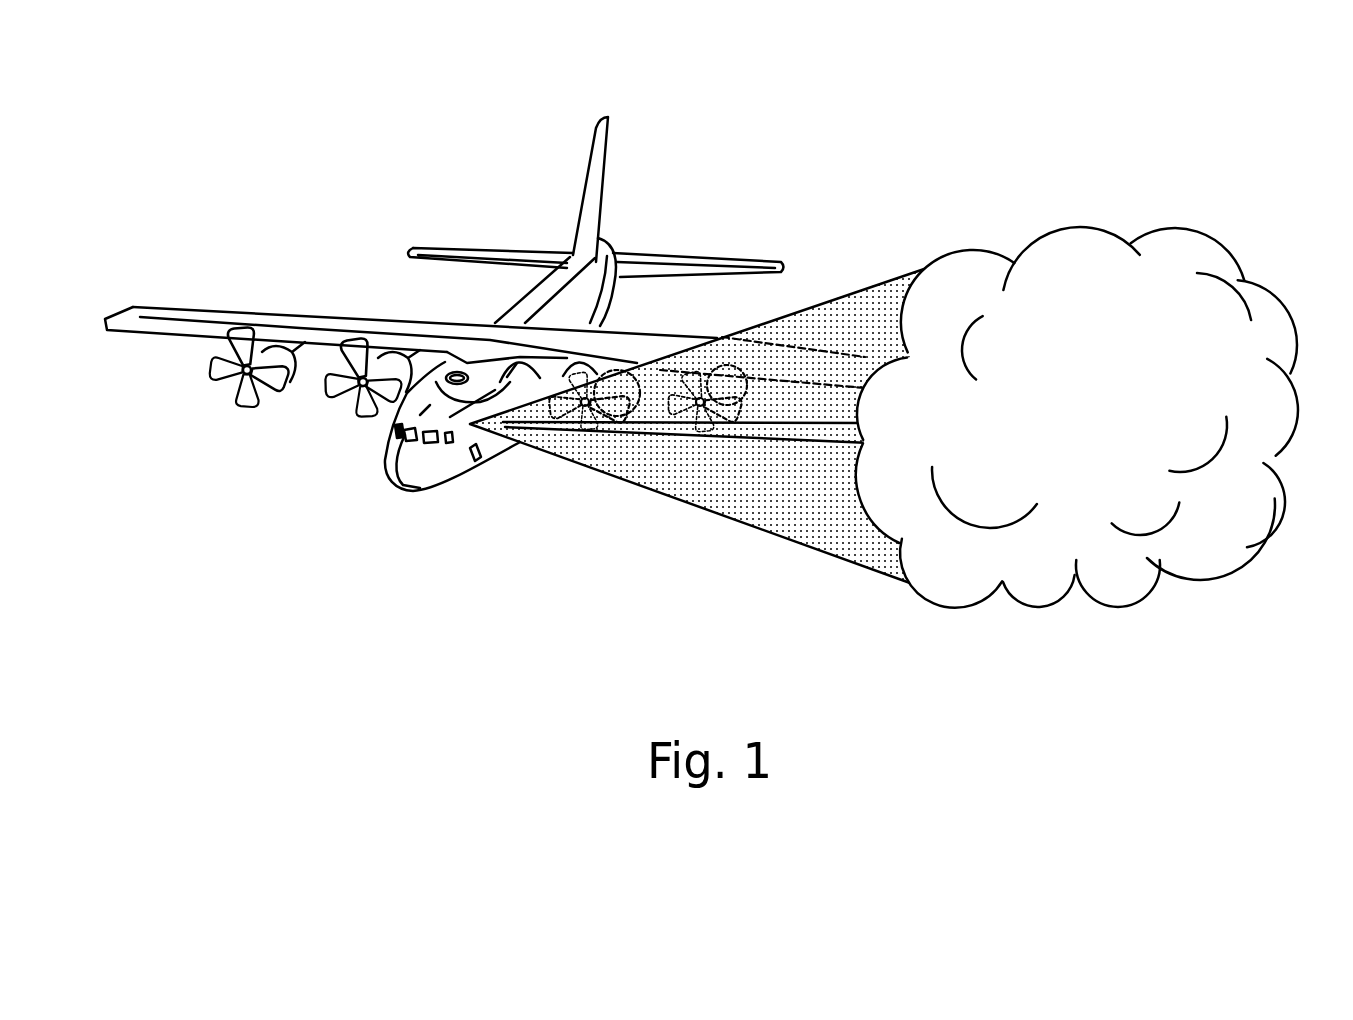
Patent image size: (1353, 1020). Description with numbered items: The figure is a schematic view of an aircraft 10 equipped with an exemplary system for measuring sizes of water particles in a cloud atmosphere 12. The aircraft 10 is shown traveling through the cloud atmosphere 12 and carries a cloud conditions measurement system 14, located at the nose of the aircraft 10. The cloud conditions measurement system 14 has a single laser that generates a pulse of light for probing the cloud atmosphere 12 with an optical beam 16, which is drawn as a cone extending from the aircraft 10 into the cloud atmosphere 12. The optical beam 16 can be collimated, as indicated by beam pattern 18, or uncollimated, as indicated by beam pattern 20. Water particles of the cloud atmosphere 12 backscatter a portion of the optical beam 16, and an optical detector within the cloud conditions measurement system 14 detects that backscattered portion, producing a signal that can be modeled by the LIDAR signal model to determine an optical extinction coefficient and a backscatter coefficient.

The aircraft 10 is at (444, 326).
The cloud atmosphere 12 is at (1102, 422).
The cloud conditions measurement system 14 is at (469, 427).
The optical beam 16 is at (702, 467).
The beam pattern 18 is at (653, 426).
The beam pattern 20 is at (710, 474).